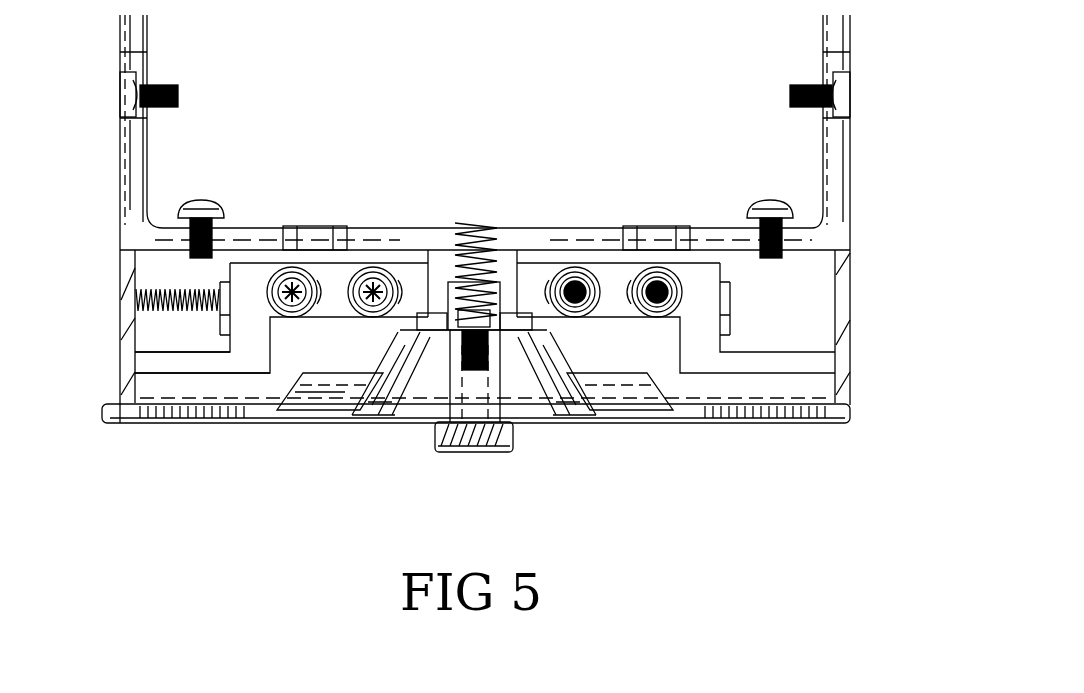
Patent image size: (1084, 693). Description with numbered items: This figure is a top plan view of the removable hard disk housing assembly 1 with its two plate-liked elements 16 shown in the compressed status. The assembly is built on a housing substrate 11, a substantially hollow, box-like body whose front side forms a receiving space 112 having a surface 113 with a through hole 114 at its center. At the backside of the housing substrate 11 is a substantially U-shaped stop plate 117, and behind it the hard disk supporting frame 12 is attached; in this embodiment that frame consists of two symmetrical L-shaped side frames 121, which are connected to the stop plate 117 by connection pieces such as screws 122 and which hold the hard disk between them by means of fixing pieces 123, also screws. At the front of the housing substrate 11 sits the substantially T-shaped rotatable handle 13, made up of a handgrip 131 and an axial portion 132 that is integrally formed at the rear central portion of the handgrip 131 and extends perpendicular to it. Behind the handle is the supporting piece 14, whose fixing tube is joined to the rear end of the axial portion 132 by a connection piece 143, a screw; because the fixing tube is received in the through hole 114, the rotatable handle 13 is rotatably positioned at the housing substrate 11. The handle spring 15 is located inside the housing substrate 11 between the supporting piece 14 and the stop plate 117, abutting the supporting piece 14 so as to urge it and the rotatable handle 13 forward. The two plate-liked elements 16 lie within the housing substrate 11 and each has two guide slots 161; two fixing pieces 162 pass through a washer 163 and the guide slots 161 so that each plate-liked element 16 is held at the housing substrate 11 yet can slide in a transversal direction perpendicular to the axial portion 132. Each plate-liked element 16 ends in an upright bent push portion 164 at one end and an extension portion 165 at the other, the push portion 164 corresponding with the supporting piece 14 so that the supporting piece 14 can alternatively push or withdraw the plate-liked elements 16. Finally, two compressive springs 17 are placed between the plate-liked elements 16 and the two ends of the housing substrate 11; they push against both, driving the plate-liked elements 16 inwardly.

The removable hard disk housing assembly 1 is at (160, 470).
The housing substrate 11 is at (870, 437).
The receiving space 112 is at (427, 400).
The surface 113 is at (505, 320).
The through hole 114 is at (447, 333).
The stop plate 117 is at (262, 240).
The hard disk supporting frame 12 is at (862, 170).
The side frames 121 is at (847, 50).
The screw 122 is at (765, 205).
The fixing pieces 123 is at (848, 92).
The rotatable handle 13 is at (448, 470).
The handgrip 131 is at (493, 450).
The axial portion 132 is at (497, 397).
The supporting piece 14 is at (507, 288).
The connection piece 143 is at (487, 360).
The handle spring 15 is at (473, 222).
The plate-liked elements 16 is at (368, 232).
The guide slots 161 is at (312, 282).
The fixing pieces 162 is at (312, 388).
The washer 163 is at (263, 283).
The push portion 164 is at (433, 333).
The extension portion 165 is at (160, 360).
The compressive springs 17 is at (155, 272).